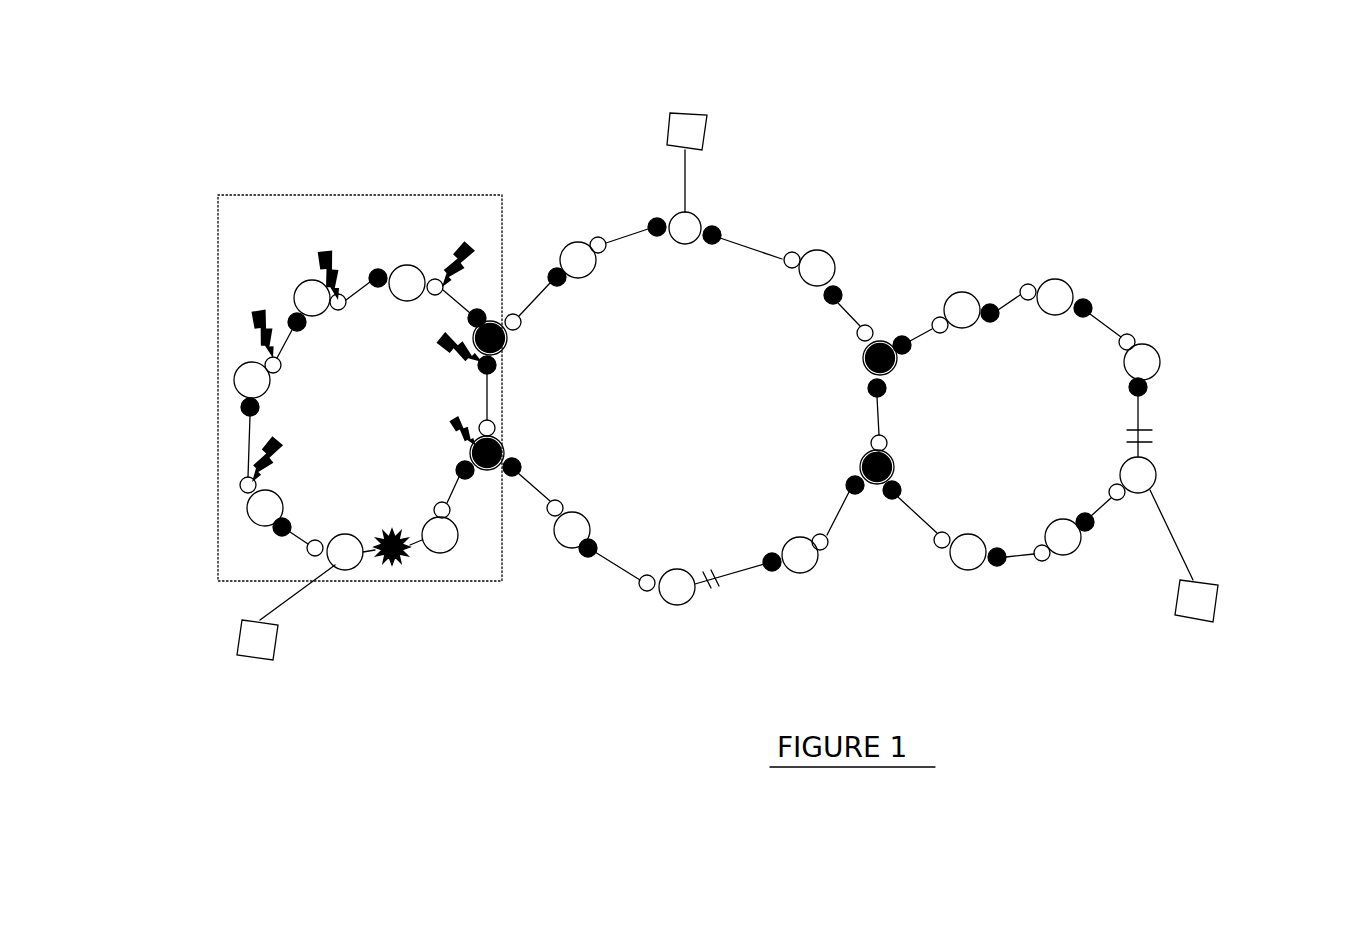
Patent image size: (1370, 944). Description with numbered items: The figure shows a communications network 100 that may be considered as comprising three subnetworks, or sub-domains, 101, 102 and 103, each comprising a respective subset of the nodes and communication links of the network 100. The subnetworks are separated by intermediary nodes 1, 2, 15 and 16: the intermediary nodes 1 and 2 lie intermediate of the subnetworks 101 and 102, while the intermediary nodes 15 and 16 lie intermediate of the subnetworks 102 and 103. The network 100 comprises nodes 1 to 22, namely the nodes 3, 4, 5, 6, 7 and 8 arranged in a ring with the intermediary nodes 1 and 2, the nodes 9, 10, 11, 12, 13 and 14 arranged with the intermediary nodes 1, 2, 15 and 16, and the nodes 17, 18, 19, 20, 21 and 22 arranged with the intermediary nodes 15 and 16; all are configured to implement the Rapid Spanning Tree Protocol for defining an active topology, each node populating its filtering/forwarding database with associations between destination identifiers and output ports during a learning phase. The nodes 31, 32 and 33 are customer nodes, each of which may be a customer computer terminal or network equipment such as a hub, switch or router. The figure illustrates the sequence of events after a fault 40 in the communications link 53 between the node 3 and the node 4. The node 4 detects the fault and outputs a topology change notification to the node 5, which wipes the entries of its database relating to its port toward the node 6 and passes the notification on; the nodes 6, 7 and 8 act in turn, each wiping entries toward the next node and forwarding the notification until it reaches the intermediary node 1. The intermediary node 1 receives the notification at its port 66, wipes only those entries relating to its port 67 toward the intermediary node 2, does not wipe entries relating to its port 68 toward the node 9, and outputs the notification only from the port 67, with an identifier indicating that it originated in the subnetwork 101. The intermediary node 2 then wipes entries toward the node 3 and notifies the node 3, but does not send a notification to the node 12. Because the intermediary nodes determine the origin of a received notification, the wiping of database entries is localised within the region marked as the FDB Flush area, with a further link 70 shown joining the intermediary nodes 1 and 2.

The communications network 100 is at (993, 148).
The subnetwork 101 is at (399, 467).
The subnetwork 102 is at (751, 361).
The subnetwork 103 is at (1073, 444).
The intermediary node 1 is at (508, 341).
The intermediary node 2 is at (533, 427).
The node 3 is at (450, 555).
The node 4 is at (350, 570).
The node 5 is at (248, 513).
The node 6 is at (230, 383).
The node 7 is at (297, 290).
The node 8 is at (407, 301).
The node 9 is at (577, 243).
The node 10 is at (700, 210).
The node 11 is at (830, 253).
The node 12 is at (560, 543).
The node 13 is at (677, 603).
The node 14 is at (810, 573).
The intermediary node 15 is at (863, 355).
The intermediary node 16 is at (892, 460).
The node 17 is at (973, 567).
The node 18 is at (1070, 557).
The node 19 is at (1152, 463).
The node 20 is at (1152, 347).
The node 21 is at (1067, 277).
The node 22 is at (962, 293).
The customer node 31 is at (278, 640).
The customer node 32 is at (686, 113).
The customer node 33 is at (1215, 578).
The fault 40 is at (395, 562).
The communications link 53 is at (420, 543).
The port 66 is at (473, 308).
The port 67 is at (497, 365).
The port 68 is at (520, 318).
The link between redundancy managers 70 is at (487, 395).